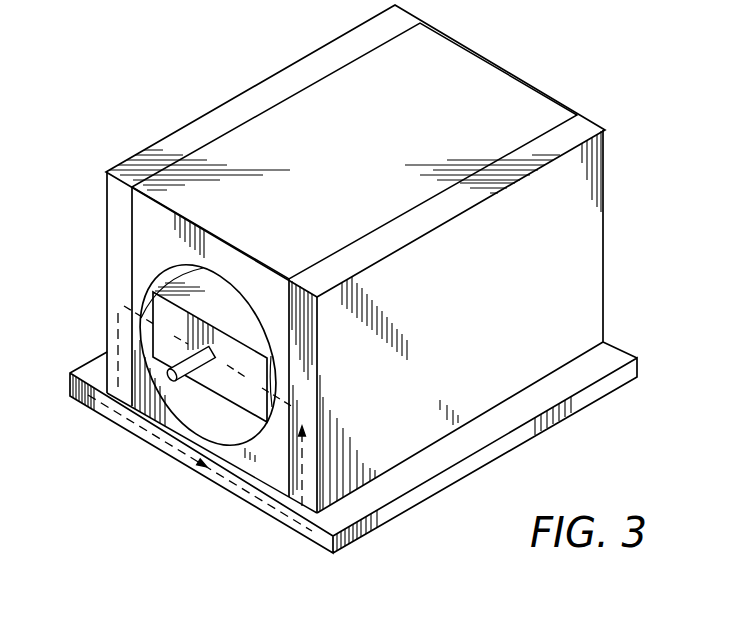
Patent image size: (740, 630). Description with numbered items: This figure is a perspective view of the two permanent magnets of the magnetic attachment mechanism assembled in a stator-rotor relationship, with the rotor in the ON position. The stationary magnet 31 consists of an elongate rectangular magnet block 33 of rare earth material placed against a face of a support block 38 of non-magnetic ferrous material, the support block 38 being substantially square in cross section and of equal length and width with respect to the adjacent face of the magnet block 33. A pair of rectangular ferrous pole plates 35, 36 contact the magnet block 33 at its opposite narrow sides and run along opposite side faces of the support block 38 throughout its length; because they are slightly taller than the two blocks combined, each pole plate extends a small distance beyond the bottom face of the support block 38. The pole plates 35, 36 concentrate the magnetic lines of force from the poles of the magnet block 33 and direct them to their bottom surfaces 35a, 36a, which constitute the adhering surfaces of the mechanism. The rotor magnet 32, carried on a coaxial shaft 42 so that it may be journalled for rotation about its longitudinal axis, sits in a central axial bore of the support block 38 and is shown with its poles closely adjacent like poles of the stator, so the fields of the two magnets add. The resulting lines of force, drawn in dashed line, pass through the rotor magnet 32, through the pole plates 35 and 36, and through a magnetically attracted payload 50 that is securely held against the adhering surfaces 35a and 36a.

The stationary magnet 31 is at (200, 91).
The rotor magnet 32 is at (211, 390).
The magnet block 33 is at (523, 92).
The pole plate 35 is at (117, 198).
The adhering surface 35a is at (108, 398).
The pole plate 36 is at (580, 127).
The adhering surface 36a is at (310, 517).
The support block 38 is at (143, 248).
The shaft 42 is at (188, 357).
The payload 50 is at (617, 357).